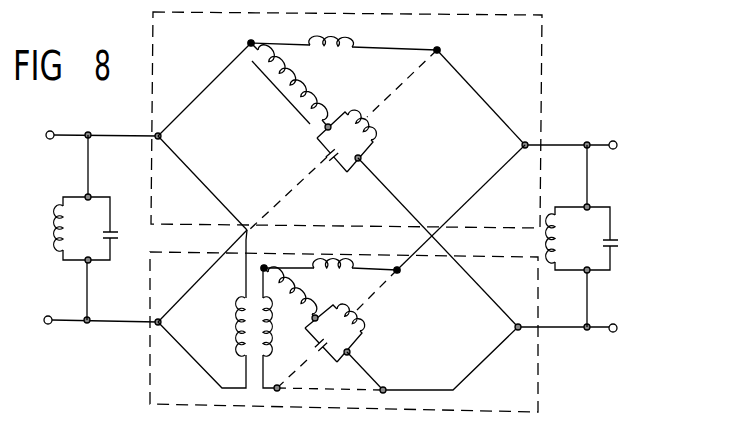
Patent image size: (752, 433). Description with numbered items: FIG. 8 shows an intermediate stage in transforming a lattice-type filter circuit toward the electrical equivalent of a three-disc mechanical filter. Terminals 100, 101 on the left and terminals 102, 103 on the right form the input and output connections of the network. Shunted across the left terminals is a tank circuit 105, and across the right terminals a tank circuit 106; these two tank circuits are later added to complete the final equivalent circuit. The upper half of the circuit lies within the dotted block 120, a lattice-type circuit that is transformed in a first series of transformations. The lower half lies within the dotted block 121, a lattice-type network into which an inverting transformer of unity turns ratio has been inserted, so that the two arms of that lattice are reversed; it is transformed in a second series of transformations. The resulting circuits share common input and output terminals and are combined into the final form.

The input terminal 100 is at (56, 131).
The input terminal 101 is at (52, 324).
The output terminal 102 is at (611, 141).
The output terminal 103 is at (609, 333).
The tank circuit 105 is at (78, 204).
The tank circuit 106 is at (598, 212).
The dotted block 120 is at (543, 55).
The dotted block 121 is at (540, 392).